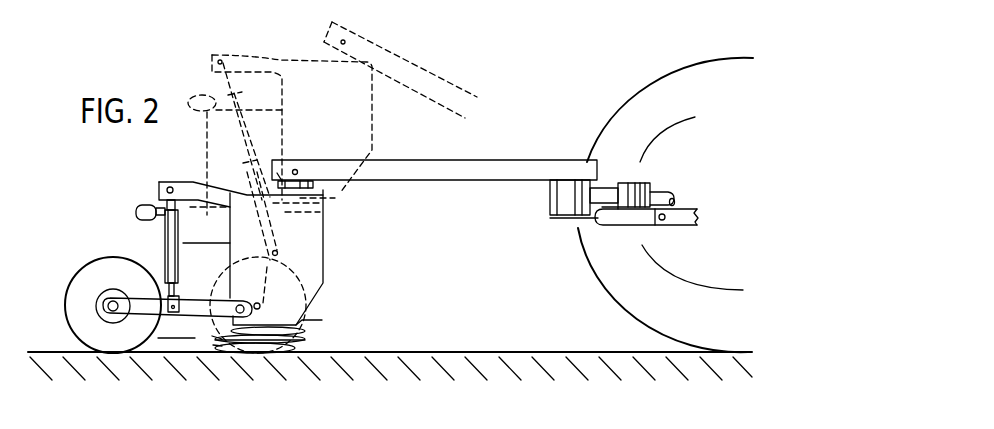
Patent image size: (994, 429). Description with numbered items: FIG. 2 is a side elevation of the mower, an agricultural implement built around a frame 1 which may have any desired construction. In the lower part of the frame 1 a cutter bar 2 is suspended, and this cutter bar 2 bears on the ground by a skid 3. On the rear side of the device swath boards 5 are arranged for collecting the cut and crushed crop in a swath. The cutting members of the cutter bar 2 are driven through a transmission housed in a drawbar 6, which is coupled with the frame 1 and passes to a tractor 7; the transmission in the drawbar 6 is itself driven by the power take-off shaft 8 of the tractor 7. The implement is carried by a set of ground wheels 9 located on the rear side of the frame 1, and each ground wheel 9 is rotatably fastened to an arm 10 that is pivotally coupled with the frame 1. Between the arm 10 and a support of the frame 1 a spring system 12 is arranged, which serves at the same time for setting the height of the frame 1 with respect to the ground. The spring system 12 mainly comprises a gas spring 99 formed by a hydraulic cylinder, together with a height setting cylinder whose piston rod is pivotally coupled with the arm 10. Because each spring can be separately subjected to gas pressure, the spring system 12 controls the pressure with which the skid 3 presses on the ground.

The frame 1 is at (312, 246).
The cutter bar 2 is at (288, 331).
The skid 3 is at (287, 354).
The swath boards 5 is at (153, 242).
The drawbar 6 is at (425, 172).
The tractor 7 is at (672, 70).
The power take-off shaft 8 is at (664, 192).
The ground wheels 9 is at (77, 266).
The arm 10 is at (200, 313).
The spring system 12 is at (166, 228).
The gas spring 99 is at (133, 198).